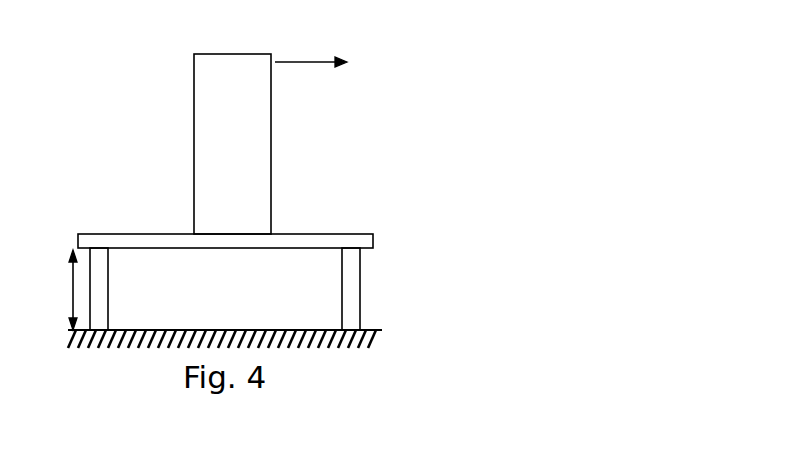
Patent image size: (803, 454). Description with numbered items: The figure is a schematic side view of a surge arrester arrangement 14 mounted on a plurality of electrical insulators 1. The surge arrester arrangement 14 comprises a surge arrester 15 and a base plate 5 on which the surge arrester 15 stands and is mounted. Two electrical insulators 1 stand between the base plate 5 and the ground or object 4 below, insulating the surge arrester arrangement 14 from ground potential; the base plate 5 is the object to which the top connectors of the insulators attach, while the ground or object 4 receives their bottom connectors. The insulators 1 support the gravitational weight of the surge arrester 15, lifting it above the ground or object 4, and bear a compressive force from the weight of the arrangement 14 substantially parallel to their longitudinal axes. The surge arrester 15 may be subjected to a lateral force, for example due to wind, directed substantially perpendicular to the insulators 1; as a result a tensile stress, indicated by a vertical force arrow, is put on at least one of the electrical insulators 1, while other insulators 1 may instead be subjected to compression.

The electrical insulator 1 is at (103, 290).
The ground or object 4 is at (148, 332).
The base plate 5 is at (337, 243).
The surge arrester arrangement 14 is at (395, 90).
The surge arrester 15 is at (263, 163).